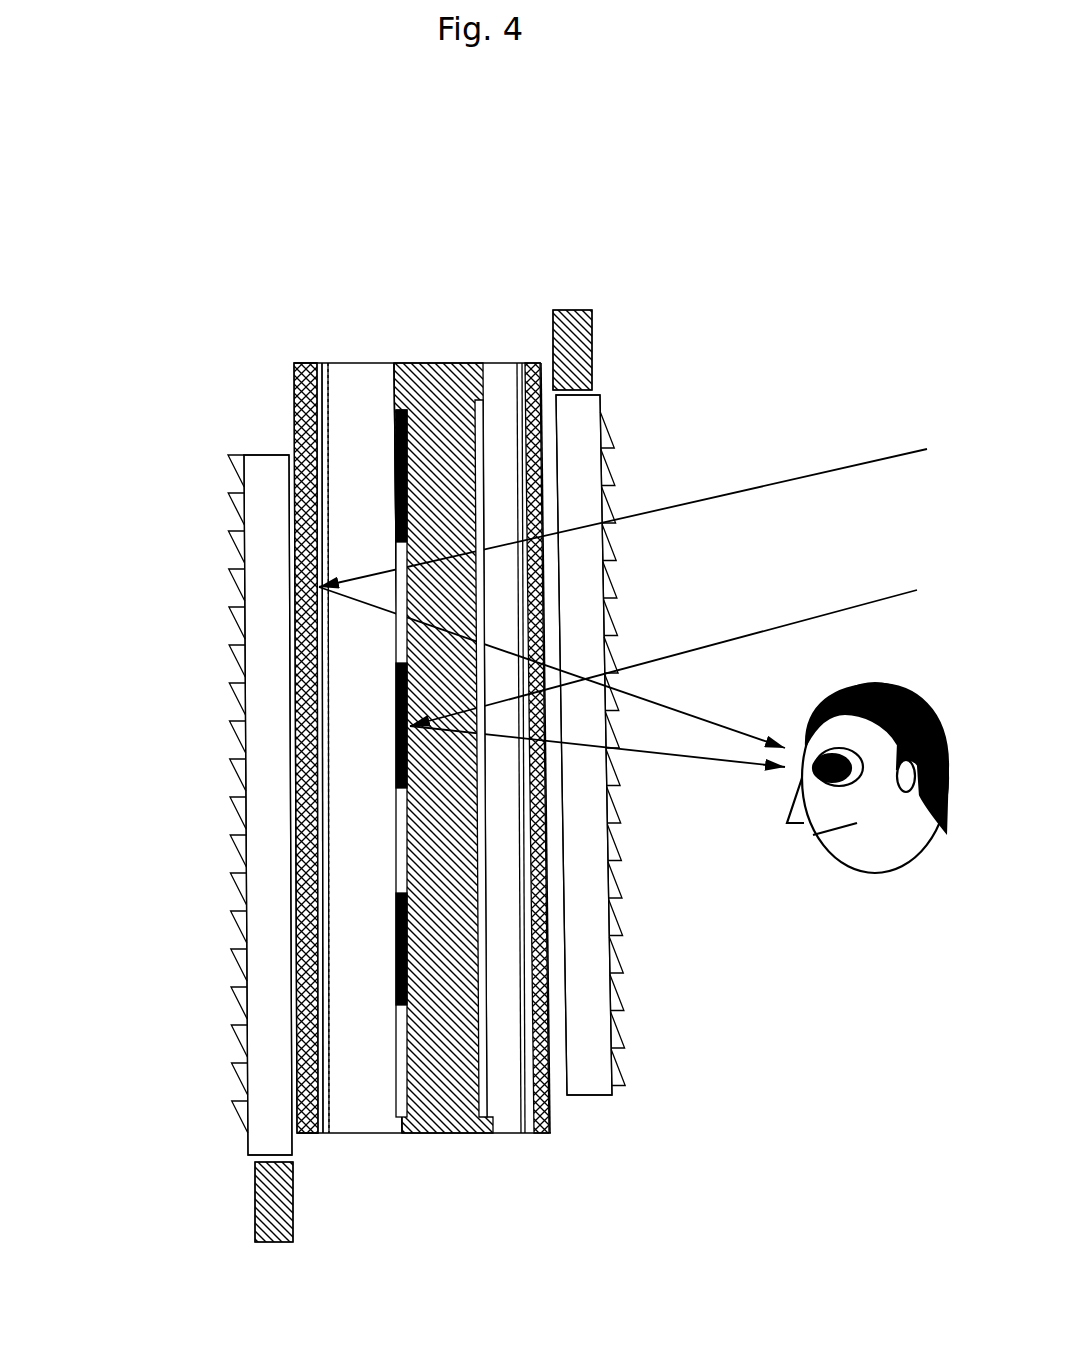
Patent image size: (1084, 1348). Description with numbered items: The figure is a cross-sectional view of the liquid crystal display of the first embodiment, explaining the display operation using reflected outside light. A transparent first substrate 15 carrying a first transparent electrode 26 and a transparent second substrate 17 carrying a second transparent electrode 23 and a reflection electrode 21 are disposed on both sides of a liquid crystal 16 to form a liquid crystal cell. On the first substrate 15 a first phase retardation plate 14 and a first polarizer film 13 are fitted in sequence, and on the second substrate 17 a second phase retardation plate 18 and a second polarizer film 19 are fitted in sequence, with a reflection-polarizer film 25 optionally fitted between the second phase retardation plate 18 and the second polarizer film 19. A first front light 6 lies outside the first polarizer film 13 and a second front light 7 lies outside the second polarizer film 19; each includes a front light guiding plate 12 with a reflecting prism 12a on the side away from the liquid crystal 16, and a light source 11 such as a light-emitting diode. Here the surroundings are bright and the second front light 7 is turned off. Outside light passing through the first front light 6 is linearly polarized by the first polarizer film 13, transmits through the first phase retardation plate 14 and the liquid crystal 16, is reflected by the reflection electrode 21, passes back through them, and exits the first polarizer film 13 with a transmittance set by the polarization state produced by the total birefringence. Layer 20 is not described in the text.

The first front light 6 is at (740, 312).
The second front light 7 is at (97, 1072).
The light source 11 is at (590, 343).
The front light guiding plate 12 is at (590, 410).
The reflecting prism 12a is at (600, 433).
The first polarizer film 13 is at (542, 1105).
The first phase retardation plate 14 is at (537, 1125).
The first substrate 15 is at (507, 1110).
The liquid crystal 16 is at (481, 1015).
The second substrate 17 is at (343, 373).
The second phase retardation plate 18 is at (322, 363).
The second polarizer film 19 is at (297, 405).
The retardation film 20 is at (383, 980).
The reflection electrode 21 is at (403, 1000).
The second transparent electrode 23 is at (430, 1133).
The reflection-polarizer film 25 is at (312, 363).
The first transparent electrode 26 is at (481, 1015).